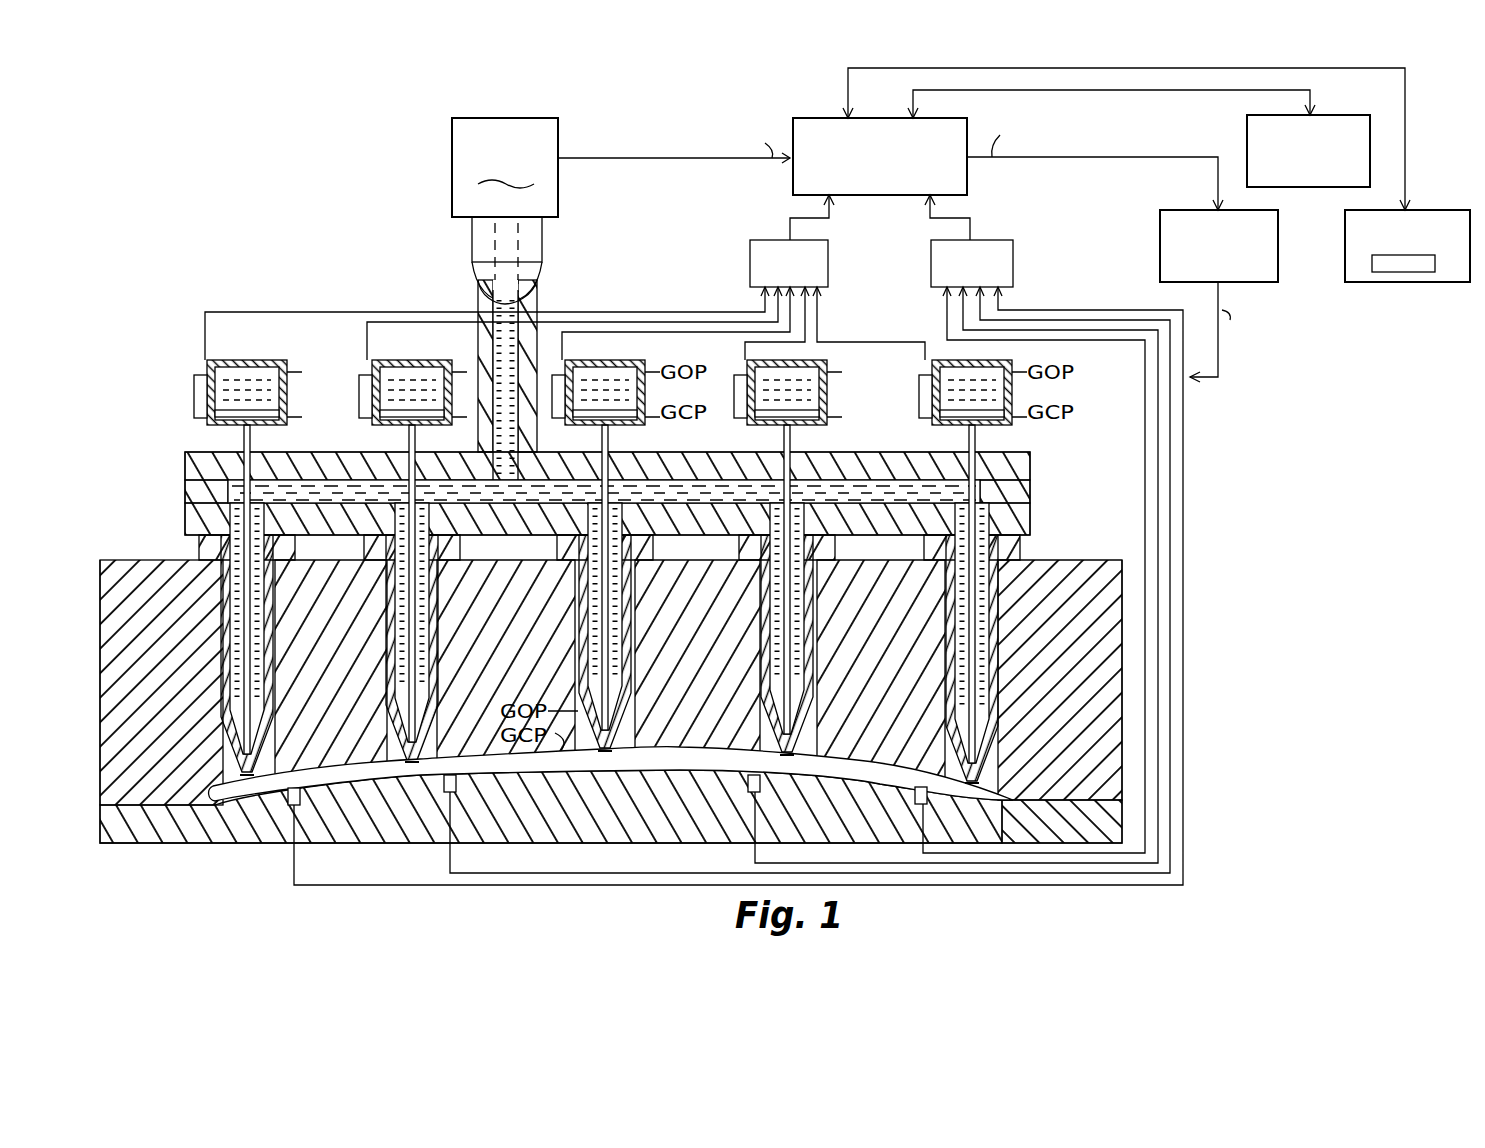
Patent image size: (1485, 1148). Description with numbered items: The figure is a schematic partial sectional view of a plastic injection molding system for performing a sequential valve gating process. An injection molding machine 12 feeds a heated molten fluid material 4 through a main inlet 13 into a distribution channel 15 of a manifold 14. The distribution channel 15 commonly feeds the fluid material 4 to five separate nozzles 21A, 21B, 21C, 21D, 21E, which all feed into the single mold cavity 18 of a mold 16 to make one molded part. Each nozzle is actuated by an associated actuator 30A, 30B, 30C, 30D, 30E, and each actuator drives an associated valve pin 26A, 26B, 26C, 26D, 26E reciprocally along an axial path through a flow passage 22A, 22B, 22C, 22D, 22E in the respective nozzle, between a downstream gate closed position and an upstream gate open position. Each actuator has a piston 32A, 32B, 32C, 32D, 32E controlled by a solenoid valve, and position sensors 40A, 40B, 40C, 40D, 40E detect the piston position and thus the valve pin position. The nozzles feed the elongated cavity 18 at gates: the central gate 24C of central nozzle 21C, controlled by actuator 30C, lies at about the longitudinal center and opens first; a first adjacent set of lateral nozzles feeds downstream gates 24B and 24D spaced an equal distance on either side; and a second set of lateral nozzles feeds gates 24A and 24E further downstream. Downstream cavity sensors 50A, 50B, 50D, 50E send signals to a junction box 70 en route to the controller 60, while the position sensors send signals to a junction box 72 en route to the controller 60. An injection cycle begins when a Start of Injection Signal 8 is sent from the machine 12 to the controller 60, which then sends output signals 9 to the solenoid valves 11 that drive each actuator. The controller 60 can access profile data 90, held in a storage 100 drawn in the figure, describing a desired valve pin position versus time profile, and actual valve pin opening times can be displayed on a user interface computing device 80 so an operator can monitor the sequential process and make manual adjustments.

The fluid material 4 is at (505, 308).
The Start of Injection Signal 8 is at (692, 170).
The output signals 9 is at (1214, 178).
The solenoid valves 11 is at (1160, 220).
The injection molding machine 12 is at (513, 117).
The main inlet 13 is at (542, 235).
The manifold 14 is at (1032, 468).
The distribution channel 15 is at (690, 480).
The mold 16 is at (152, 562).
The mold cavity 18 is at (570, 762).
The nozzle 21A is at (277, 647).
The nozzle 21B is at (442, 647).
The central nozzle 21C is at (635, 647).
The nozzle 21D is at (817, 647).
The nozzle 21E is at (1002, 647).
The flow passage 22A is at (257, 580).
The flow passage 22B is at (422, 580).
The flow passage 22C is at (615, 580).
The flow passage 22D is at (797, 580).
The flow passage 22E is at (982, 580).
The gate 24A is at (247, 778).
The downstream gate 24B is at (412, 763).
The central gate 24C is at (605, 752).
The downstream gate 24D is at (790, 757).
The gate 24E is at (975, 786).
The valve pin 26A is at (250, 688).
The valve pin 26B is at (415, 688).
The valve pin 26C is at (608, 688).
The valve pin 26D is at (790, 688).
The valve pin 26E is at (975, 688).
The actuator 30A is at (248, 360).
The actuator 30B is at (410, 360).
The actuator 30C is at (607, 360).
The actuator 30D is at (810, 360).
The actuator 30E is at (990, 360).
The piston 32A is at (225, 416).
The piston 32B is at (395, 416).
The piston 32C is at (625, 416).
The piston 32D is at (805, 416).
The piston 32E is at (990, 416).
The position sensor 40A is at (194, 393).
The position sensor 40B is at (359, 393).
The position sensor 40C is at (548, 408).
The position sensor 40D is at (734, 393).
The position sensor 40E is at (919, 393).
The cavity sensor 50A is at (300, 796).
The cavity sensor 50B is at (456, 783).
The cavity sensor 50D is at (760, 783).
The cavity sensor 50E is at (928, 790).
The controller 60 is at (826, 118).
The junction box 70 is at (830, 248).
The junction box 72 is at (1014, 248).
The computing device 80 is at (1326, 114).
The profile data 90 is at (1412, 272).
The storage 100 is at (1437, 206).